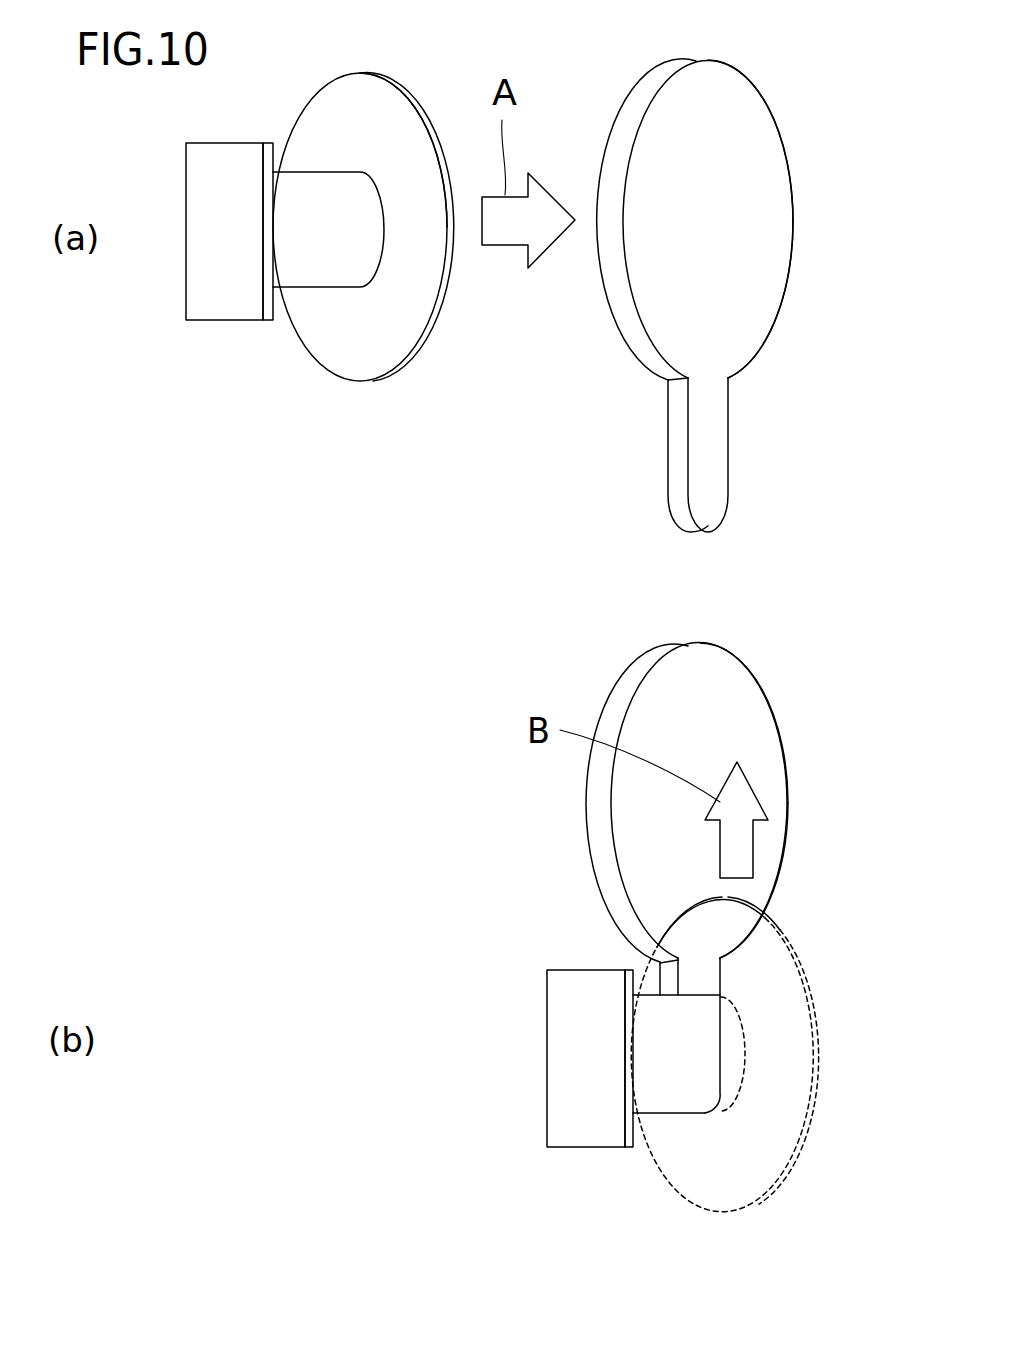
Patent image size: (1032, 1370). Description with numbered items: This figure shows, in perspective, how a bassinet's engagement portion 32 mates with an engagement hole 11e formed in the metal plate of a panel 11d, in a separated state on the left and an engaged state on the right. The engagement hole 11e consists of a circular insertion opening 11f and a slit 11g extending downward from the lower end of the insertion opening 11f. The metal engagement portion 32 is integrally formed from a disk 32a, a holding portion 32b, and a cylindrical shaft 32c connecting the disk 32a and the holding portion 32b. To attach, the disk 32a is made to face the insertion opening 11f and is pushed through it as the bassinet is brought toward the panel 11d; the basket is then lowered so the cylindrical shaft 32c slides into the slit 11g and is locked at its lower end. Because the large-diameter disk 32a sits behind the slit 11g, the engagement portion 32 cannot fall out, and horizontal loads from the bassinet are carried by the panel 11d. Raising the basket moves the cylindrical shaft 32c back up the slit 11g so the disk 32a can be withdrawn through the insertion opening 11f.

The engagement portion 32 is at (368, 382).
The disk 32a is at (342, 107).
The holding portion 32b is at (222, 292).
The cylindrical shaft 32c is at (310, 253).
The panel 11d is at (887, 341).
The engagement hole 11e is at (772, 118).
The insertion opening 11f is at (792, 275).
The slit 11g is at (733, 445).